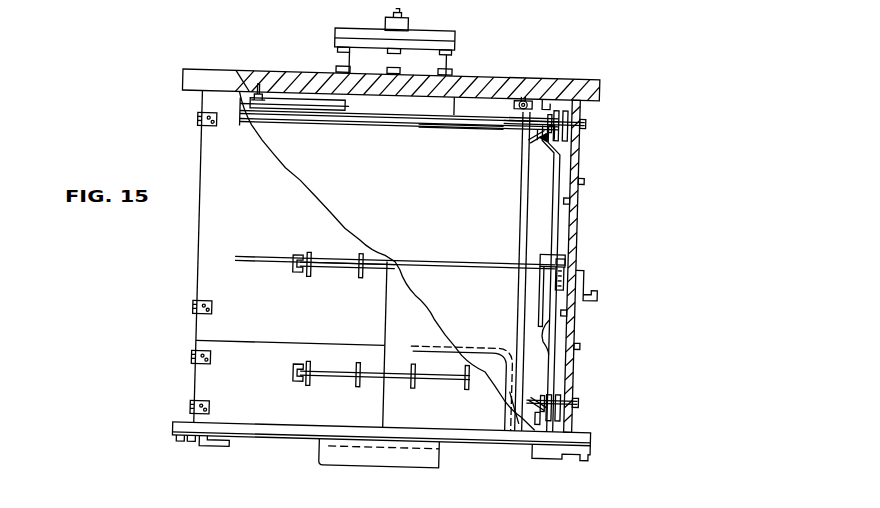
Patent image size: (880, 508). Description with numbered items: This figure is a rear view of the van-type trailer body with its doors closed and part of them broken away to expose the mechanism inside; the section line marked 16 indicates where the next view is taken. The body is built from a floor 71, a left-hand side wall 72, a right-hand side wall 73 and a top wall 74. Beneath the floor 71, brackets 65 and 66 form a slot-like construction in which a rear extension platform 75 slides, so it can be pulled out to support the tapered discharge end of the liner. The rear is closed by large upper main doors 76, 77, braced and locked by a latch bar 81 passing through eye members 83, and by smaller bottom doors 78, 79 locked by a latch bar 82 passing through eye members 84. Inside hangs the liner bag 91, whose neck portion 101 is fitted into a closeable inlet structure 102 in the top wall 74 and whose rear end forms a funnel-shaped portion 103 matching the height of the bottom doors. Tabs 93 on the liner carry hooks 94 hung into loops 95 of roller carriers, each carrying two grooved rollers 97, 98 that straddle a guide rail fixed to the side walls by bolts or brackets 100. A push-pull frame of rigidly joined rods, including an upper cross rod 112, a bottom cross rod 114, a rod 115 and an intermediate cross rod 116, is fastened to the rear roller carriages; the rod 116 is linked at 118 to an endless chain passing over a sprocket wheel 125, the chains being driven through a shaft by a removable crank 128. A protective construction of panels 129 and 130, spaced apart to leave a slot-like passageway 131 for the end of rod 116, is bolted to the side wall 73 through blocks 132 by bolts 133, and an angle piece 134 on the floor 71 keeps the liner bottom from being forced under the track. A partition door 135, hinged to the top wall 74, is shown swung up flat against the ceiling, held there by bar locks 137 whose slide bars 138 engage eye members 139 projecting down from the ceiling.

The section line 16 is at (200, 100).
The bracket 65 is at (555, 455).
The bracket 66 is at (206, 450).
The floor 71 is at (588, 438).
The side wall 72 is at (200, 225).
The side wall 73 is at (573, 220).
The top wall 74 is at (548, 86).
The rear extension platform 75 is at (330, 458).
The main door 76 is at (208, 255).
The main door 77 is at (412, 290).
The bottom door 78 is at (200, 370).
The bottom door 79 is at (496, 425).
The latch bar 81 is at (345, 271).
The latch bar 82 is at (345, 365).
The eye member 83 is at (308, 278).
The eye member 84 is at (358, 386).
The liner bag 91 is at (445, 105).
The tab 93 is at (541, 145).
The hook 94 is at (535, 142).
The loop 95 is at (520, 126).
The grooved roller 97 is at (573, 108).
The grooved roller 98 is at (558, 138).
The bolt or bracket 100 is at (580, 125).
The neck portion 101 is at (350, 100).
The inlet structure 102 is at (345, 56).
The funnel-shaped portion 103 is at (495, 352).
The upper cross rod 112 is at (380, 120).
The bottom cross rod 114 is at (515, 440).
The rod 115 is at (520, 204).
The intermediate cross rod 116 is at (458, 262).
The link 118 is at (563, 262).
The sprocket wheel 125 is at (565, 268).
The crank 128 is at (595, 285).
The panel 129 is at (560, 156).
The panel 130 is at (560, 330).
The slot-like passageway 131 is at (565, 258).
The block 132 is at (573, 198).
The bolt 133 is at (579, 183).
The angle piece 134 is at (532, 424).
The door 135 is at (315, 110).
The bar lock 137 is at (258, 84).
The slide bar 138 is at (517, 100).
The eye member 139 is at (260, 110).